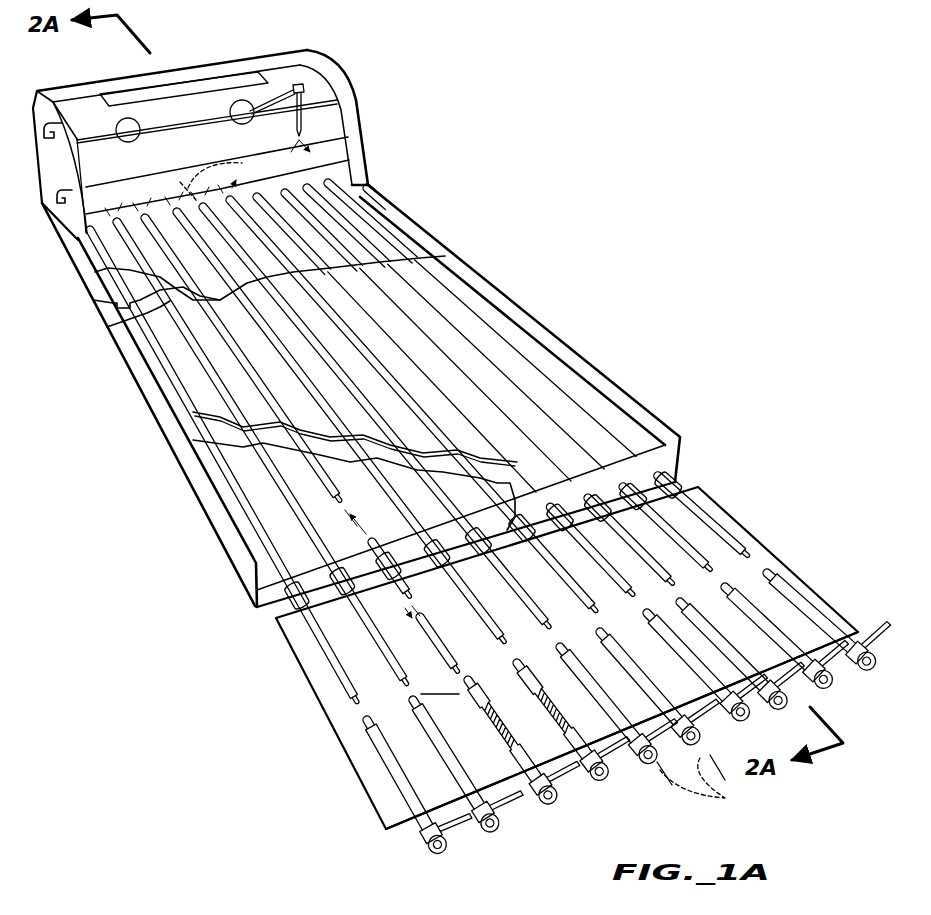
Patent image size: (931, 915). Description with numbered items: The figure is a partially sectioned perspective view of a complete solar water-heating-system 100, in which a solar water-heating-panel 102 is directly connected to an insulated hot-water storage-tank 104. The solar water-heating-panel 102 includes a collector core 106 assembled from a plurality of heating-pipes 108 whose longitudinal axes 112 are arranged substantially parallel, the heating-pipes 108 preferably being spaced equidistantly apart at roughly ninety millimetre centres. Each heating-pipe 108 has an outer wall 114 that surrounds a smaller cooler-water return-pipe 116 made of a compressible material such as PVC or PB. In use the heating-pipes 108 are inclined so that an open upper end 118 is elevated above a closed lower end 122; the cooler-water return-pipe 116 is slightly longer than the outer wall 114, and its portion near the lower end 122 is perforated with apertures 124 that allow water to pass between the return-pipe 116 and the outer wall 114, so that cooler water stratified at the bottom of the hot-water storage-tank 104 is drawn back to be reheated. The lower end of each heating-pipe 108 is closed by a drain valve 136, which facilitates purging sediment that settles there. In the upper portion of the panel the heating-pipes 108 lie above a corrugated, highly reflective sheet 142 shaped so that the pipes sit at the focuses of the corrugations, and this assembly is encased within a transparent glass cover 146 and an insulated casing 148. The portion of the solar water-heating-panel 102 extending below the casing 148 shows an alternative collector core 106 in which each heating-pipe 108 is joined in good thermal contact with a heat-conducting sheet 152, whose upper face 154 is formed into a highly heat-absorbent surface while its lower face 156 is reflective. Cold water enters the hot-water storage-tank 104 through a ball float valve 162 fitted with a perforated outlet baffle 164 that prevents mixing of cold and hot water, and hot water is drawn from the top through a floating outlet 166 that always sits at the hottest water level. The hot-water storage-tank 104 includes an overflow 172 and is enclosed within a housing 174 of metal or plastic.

The solar water-heating-system 100 is at (296, 826).
The solar water-heating-panel 102 is at (113, 303).
The hot-water storage-tank 104 is at (272, 60).
The collector core 106 is at (107, 327).
The heating-pipe 108 is at (374, 200).
The longitudinal axis 112 is at (228, 166).
The outer wall 114 is at (468, 490).
The cooler-water return-pipe 116 is at (332, 184).
The open upper end 118 is at (107, 268).
The closed lower end 122 is at (258, 590).
The apertures 124 is at (366, 544).
The drain valve 136 is at (490, 831).
The reflective sheet 142 is at (230, 437).
The transparent glass cover 146 is at (462, 303).
The insulated casing 148 is at (157, 397).
The heat-conducting sheet 152 is at (355, 650).
The upper face 154 is at (440, 682).
The lower face 156 is at (400, 831).
The ball float valve 162 is at (305, 88).
The perforated outlet baffle 164 is at (310, 130).
The floating outlet 166 is at (86, 192).
The overflow 172 is at (47, 92).
The housing 174 is at (318, 60).